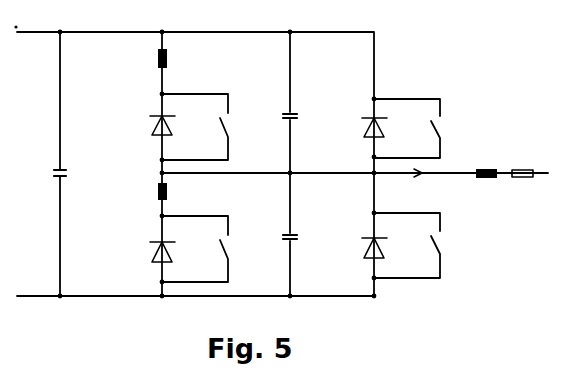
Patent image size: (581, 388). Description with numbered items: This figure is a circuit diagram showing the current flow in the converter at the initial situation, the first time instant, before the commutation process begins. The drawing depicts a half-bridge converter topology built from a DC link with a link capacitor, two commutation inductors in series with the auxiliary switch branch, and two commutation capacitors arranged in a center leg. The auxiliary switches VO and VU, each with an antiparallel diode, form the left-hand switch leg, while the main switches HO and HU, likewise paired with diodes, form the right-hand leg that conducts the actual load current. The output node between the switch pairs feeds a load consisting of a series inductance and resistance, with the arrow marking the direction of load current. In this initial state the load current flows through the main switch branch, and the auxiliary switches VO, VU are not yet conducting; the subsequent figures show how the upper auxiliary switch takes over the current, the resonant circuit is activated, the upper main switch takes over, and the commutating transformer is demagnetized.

The switch VO is at (204, 127).
The switch VU is at (204, 249).
The switch HO is at (416, 128).
The switch HU is at (416, 245).